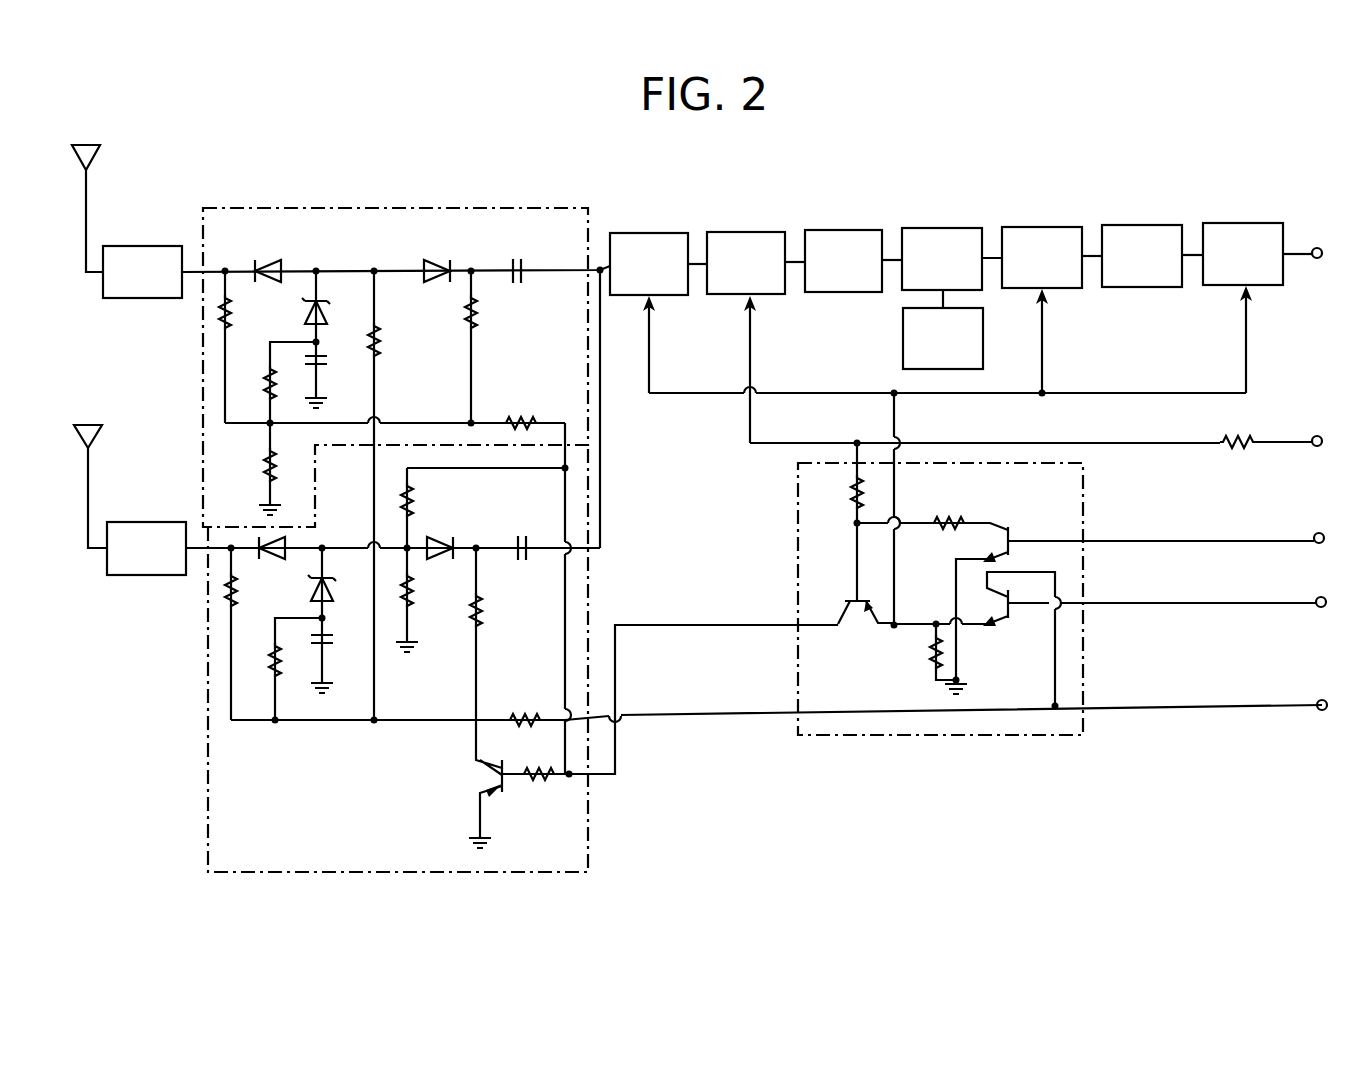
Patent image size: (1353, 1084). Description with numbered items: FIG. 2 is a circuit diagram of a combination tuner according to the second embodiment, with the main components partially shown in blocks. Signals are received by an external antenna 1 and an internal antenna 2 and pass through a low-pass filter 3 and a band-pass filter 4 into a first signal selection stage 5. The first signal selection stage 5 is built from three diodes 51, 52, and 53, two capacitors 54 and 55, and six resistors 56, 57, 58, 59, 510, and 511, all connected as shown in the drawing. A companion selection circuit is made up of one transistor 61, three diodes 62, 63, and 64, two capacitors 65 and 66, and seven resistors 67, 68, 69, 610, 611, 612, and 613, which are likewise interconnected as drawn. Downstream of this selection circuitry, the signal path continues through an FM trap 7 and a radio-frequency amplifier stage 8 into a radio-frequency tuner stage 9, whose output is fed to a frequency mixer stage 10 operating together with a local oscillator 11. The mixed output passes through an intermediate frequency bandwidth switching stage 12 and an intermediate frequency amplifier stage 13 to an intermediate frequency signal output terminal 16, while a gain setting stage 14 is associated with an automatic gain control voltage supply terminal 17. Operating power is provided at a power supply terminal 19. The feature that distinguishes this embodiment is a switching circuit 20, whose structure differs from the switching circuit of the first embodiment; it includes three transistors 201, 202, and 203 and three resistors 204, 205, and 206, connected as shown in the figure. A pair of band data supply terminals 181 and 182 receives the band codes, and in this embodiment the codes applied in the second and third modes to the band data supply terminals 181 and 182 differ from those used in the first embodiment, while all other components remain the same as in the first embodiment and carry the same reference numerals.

The external antenna 1 is at (102, 152).
The internal antenna 2 is at (104, 432).
The low-pass filter 3 is at (152, 246).
The band-pass filter 4 is at (152, 522).
The first signal selection stage 5 is at (491, 208).
The diode 51 is at (270, 260).
The diode 52 is at (438, 260).
The diode 53 is at (327, 322).
The capacitor 54 is at (527, 260).
The capacitor 55 is at (328, 364).
The resistor 56 is at (232, 318).
The resistor 57 is at (264, 380).
The resistor 58 is at (265, 457).
The resistor 59 is at (380, 344).
The resistor 510 is at (478, 318).
The resistor 511 is at (522, 414).
The transistor 61 is at (486, 783).
The diode 62 is at (276, 560).
The diode 63 is at (443, 560).
The diode 64 is at (333, 598).
The capacitor 65 is at (523, 534).
The capacitor 66 is at (333, 646).
The resistor 67 is at (237, 594).
The resistor 68 is at (269, 657).
The resistor 69 is at (413, 502).
The resistor 610 is at (413, 608).
The resistor 611 is at (482, 612).
The resistor 612 is at (524, 710).
The resistor 613 is at (540, 784).
The FM trap 7 is at (667, 233).
The radio-frequency amplifier stage 8 is at (762, 232).
The radio-frequency tuner stage 9 is at (858, 230).
The frequency mixer stage 10 is at (957, 228).
The local oscillator 11 is at (903, 342).
The intermediate frequency bandwidth switching stage 12 is at (1059, 227).
The intermediate frequency amplifier stage 13 is at (1154, 225).
The gain setting stage 14 is at (1254, 223).
The intermediate frequency signal output terminal 16 is at (1318, 248).
The automatic gain control voltage supply terminal 17 is at (1318, 435).
The band data supply terminal 181 is at (1321, 608).
The band data supply terminal 182 is at (1320, 532).
The power supply terminal 19 is at (1322, 711).
The switching circuit 20 is at (1084, 511).
The transistor 201 is at (1016, 628).
The transistor 202 is at (1016, 534).
The transistor 203 is at (854, 624).
The resistor 204 is at (932, 656).
The resistor 205 is at (950, 522).
The resistor 206 is at (854, 512).